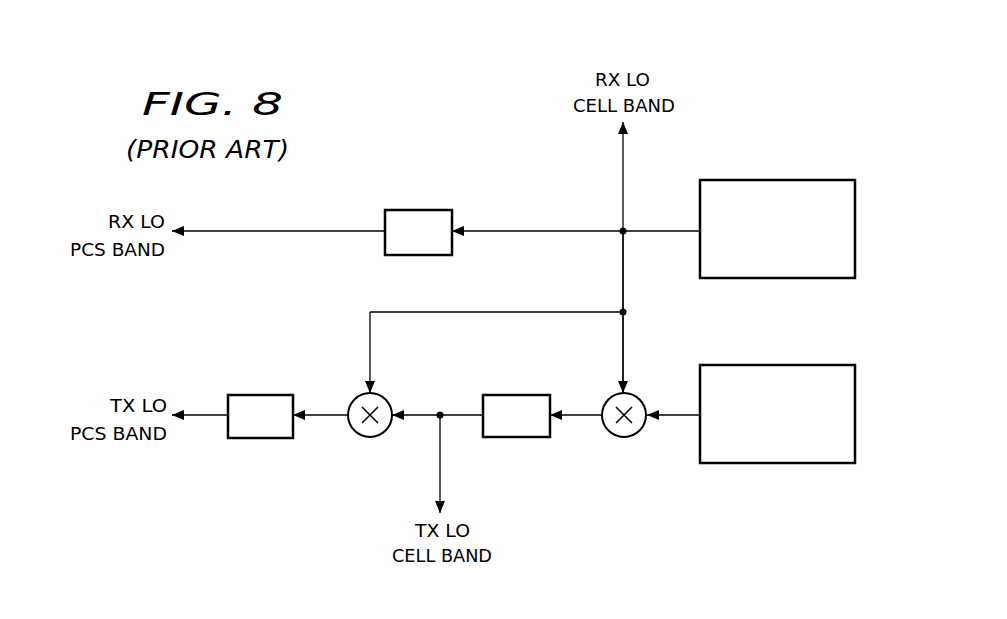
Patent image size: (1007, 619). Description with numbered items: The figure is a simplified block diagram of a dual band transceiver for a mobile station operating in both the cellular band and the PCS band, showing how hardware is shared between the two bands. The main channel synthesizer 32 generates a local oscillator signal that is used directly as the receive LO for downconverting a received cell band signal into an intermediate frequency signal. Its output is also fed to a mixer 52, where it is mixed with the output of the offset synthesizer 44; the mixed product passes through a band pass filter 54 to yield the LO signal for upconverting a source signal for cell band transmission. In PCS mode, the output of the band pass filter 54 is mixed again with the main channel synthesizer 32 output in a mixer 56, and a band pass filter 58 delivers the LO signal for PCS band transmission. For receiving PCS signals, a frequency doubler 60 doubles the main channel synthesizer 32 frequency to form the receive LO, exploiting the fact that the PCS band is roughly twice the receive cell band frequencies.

The frequency doubler 60 is at (410, 210).
The main channel synthesizer 32 is at (856, 228).
The offset synthesizer 44 is at (856, 414).
The mixer 52 is at (626, 437).
The band pass filter 54 is at (517, 437).
The mixer 56 is at (372, 440).
The band pass filter 58 is at (256, 440).